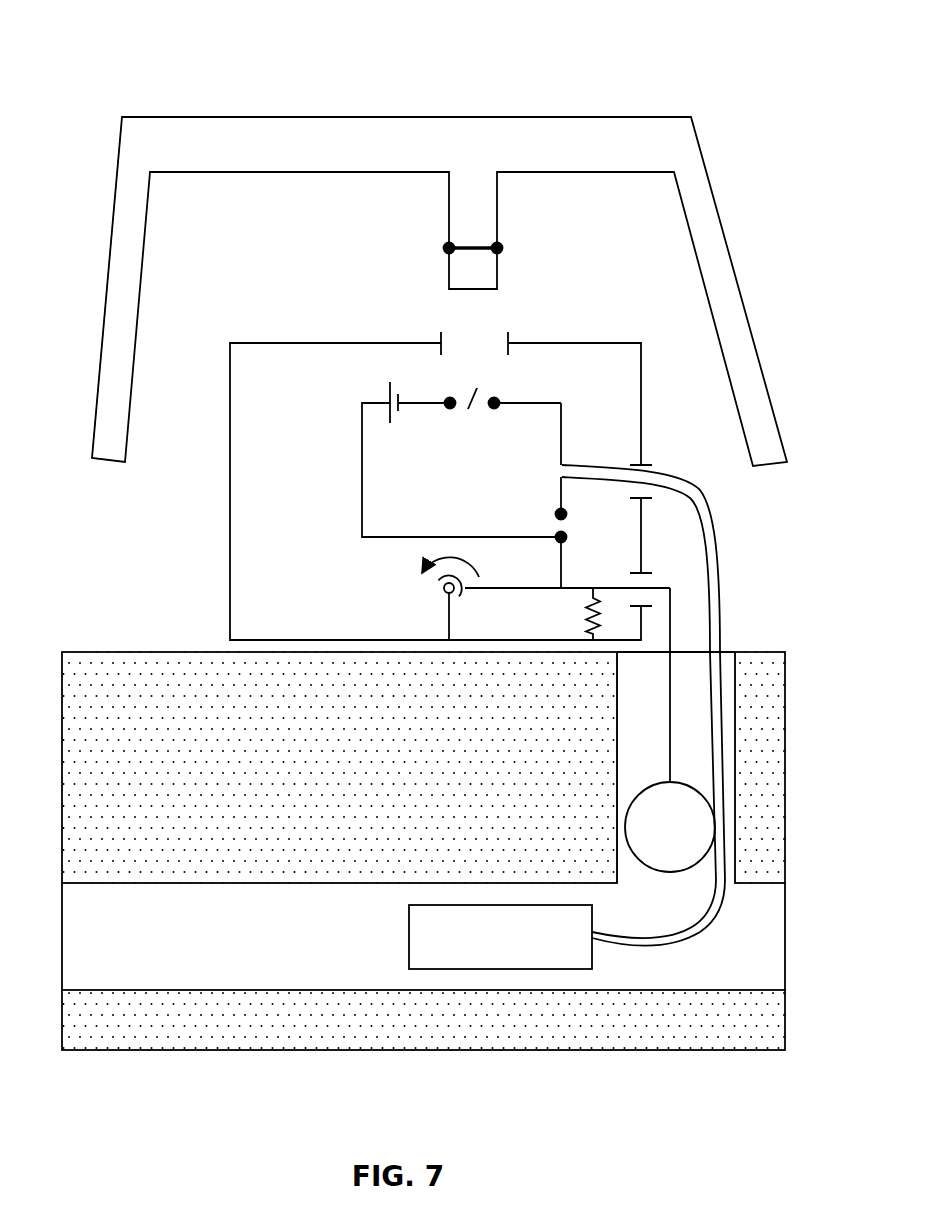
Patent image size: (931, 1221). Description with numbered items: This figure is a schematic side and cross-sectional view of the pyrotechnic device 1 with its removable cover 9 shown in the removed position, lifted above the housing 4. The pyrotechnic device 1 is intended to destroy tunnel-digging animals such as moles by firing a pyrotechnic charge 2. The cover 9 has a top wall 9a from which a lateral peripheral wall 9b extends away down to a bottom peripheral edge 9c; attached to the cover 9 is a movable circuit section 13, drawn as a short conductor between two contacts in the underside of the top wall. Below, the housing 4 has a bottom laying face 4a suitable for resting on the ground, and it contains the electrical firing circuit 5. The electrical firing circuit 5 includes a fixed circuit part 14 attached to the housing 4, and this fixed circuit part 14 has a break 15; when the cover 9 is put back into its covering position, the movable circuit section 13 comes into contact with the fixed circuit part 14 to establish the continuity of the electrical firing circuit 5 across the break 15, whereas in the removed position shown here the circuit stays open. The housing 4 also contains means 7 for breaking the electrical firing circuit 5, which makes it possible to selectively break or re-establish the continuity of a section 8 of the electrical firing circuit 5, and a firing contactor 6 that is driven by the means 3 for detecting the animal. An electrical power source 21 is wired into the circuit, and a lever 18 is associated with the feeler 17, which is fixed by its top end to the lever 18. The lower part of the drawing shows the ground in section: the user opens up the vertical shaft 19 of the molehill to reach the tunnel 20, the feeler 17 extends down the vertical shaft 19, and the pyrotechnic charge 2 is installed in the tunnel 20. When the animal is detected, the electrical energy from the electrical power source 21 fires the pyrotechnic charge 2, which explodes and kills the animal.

The pyrotechnic device 1 is at (140, 108).
The cover 9 is at (586, 98).
The top wall 9a is at (383, 130).
The lateral peripheral wall 9b is at (101, 338).
The bottom peripheral edge 9c is at (92, 458).
The movable circuit section 13 is at (481, 247).
The housing 4 is at (226, 560).
The bottom laying face 4a is at (232, 640).
The electrical firing circuit 5 is at (354, 465).
The electrical power source 21 is at (398, 388).
The fixed circuit part 14 is at (440, 410).
The break 15 is at (470, 406).
The section of electrical firing circuit 8 is at (483, 391).
The means for breaking the electrical firing circuit 7 is at (502, 416).
The firing contactor 6 is at (550, 519).
The lever 18 is at (652, 587).
The means for detecting the animal 3 is at (658, 712).
The vertical shaft 19 is at (680, 735).
The feeler 17 is at (668, 748).
The pyrotechnic charge 2 is at (418, 940).
The tunnel 20 is at (222, 940).